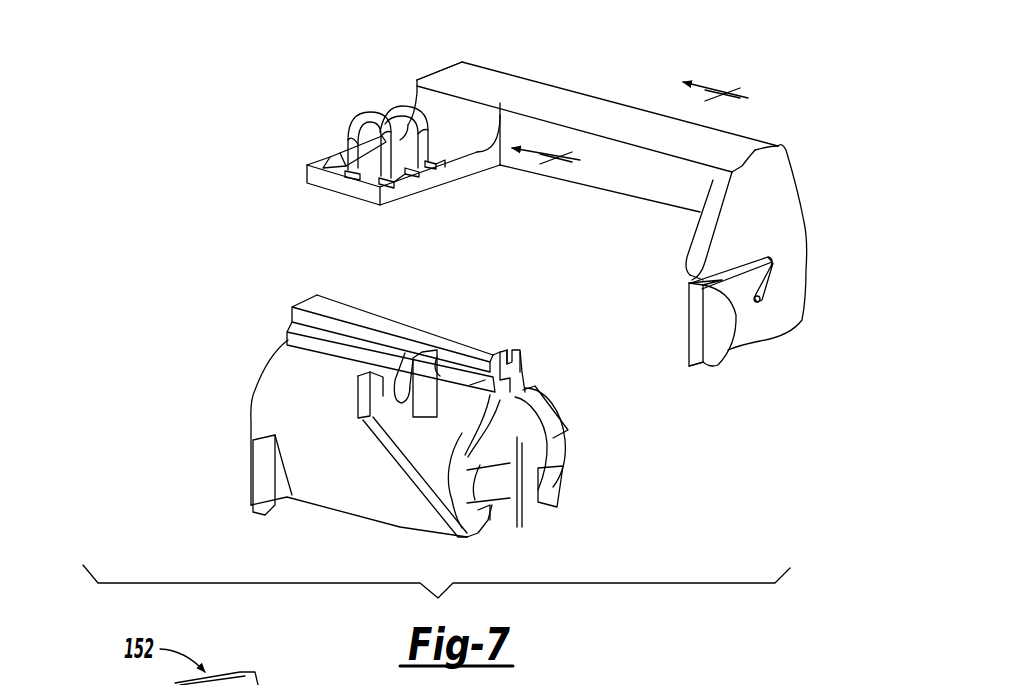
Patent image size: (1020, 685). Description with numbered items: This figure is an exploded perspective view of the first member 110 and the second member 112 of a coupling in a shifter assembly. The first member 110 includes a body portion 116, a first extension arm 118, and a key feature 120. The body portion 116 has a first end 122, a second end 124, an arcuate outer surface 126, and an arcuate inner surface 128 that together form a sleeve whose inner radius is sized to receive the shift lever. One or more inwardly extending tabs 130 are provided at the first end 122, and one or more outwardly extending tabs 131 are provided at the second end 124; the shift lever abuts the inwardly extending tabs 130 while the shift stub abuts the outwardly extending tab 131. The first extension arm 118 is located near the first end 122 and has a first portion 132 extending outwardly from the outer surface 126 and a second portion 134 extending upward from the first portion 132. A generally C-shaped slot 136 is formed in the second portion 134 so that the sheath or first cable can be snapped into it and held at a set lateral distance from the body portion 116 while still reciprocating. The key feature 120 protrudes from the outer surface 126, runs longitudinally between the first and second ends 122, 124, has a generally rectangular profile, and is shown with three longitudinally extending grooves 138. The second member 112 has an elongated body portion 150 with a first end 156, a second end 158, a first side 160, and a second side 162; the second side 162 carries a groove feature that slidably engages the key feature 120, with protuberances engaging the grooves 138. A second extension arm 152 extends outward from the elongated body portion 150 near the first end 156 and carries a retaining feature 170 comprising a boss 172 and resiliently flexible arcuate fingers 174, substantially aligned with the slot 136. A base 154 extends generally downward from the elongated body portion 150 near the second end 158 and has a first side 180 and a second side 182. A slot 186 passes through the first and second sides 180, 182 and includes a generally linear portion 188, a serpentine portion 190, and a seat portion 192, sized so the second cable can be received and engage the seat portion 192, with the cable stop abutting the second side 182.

The first member 110 is at (394, 422).
The second member 112 is at (577, 140).
The body portion 116 is at (340, 522).
The first extension arm 118 is at (402, 463).
The key feature 120 is at (453, 322).
The first end 122 is at (560, 425).
The second end 124 is at (275, 350).
The arcuate outer surface 126 is at (282, 395).
The arcuate inner surface 128 is at (545, 455).
The inwardly extending tabs 130 is at (505, 515).
The outwardly extending tab 131 is at (264, 492).
The first portion 132 is at (462, 525).
The second portion 134 is at (440, 360).
The C-shaped slot 136 is at (395, 388).
The grooves 138 is at (505, 355).
The elongated body portion 150 is at (547, 78).
The second extension arm 152 is at (369, 147).
The base 154 is at (741, 277).
The first end 156 is at (436, 72).
The second end 158 is at (762, 144).
The first side 160 is at (631, 108).
The second side 162 is at (623, 194).
The retaining feature 170 is at (348, 108).
The boss 172 is at (331, 162).
The resiliently flexible arcuate fingers 174 is at (410, 166).
The first side 180 is at (690, 345).
The second side 182 is at (718, 362).
The slot 186 is at (740, 264).
The linear portion 188 is at (720, 348).
The serpentine portion 190 is at (773, 262).
The seat portion 192 is at (760, 302).